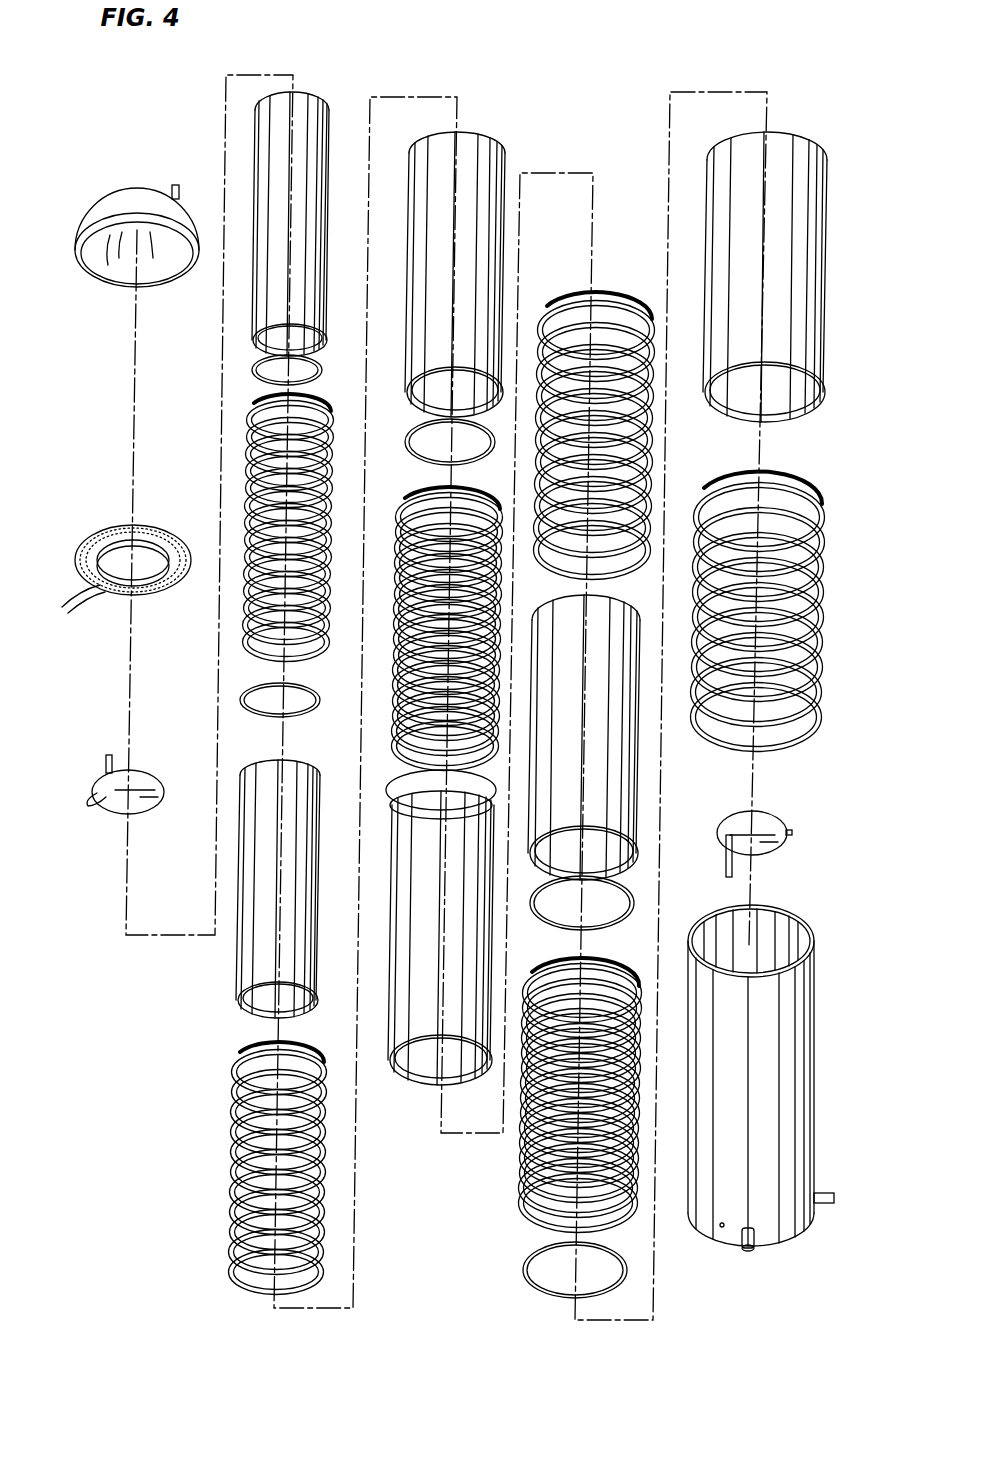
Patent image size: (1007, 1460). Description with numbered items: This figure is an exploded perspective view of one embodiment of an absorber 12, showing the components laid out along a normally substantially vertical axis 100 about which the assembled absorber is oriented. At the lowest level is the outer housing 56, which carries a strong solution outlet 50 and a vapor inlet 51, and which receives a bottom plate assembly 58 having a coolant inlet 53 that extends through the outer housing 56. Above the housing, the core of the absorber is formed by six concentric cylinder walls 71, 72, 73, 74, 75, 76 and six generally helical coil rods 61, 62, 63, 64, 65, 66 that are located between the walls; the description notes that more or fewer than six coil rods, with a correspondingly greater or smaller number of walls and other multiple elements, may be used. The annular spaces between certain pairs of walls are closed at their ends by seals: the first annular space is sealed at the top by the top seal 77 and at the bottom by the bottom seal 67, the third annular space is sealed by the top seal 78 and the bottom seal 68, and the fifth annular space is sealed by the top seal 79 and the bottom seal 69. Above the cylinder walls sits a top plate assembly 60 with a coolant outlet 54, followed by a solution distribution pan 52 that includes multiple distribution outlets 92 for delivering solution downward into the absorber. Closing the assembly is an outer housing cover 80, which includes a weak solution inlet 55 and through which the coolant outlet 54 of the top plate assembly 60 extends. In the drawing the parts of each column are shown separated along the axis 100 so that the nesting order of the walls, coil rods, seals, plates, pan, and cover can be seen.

The absorber 12 is at (93, 70).
The strong solution outlet 50 is at (748, 1252).
The vapor inlet 51 is at (825, 1205).
The solution distribution pan 52 is at (80, 543).
The coolant inlet 53 is at (725, 876).
The coolant outlet 54 is at (108, 754).
The weak solution inlet 55 is at (176, 183).
The outer housing 56 is at (800, 1132).
The bottom plate assembly 58 is at (768, 822).
The top plate assembly 60 is at (112, 803).
The helical coil rod 61 is at (252, 412).
The helical coil rod 62 is at (250, 1056).
The helical coil rod 63 is at (404, 502).
The helical coil rod 64 is at (610, 300).
The helical coil rod 65 is at (603, 955).
The helical coil rod 66 is at (812, 472).
The bottom seal 67 is at (315, 690).
The bottom seal 68 is at (392, 795).
The bottom seal 69 is at (533, 1248).
The cylinder wall 71 is at (312, 98).
The cylinder wall 72 is at (300, 762).
The cylinder wall 73 is at (478, 142).
The cylinder wall 74 is at (429, 941).
The cylinder wall 75 is at (622, 618).
The cylinder wall 76 is at (802, 150).
The top seal 77 is at (252, 372).
The top seal 78 is at (408, 442).
The top seal 79 is at (536, 912).
The outer housing cover 80 is at (80, 243).
The distribution outlets 92 is at (72, 592).
The vertical axis 100 is at (134, 362).